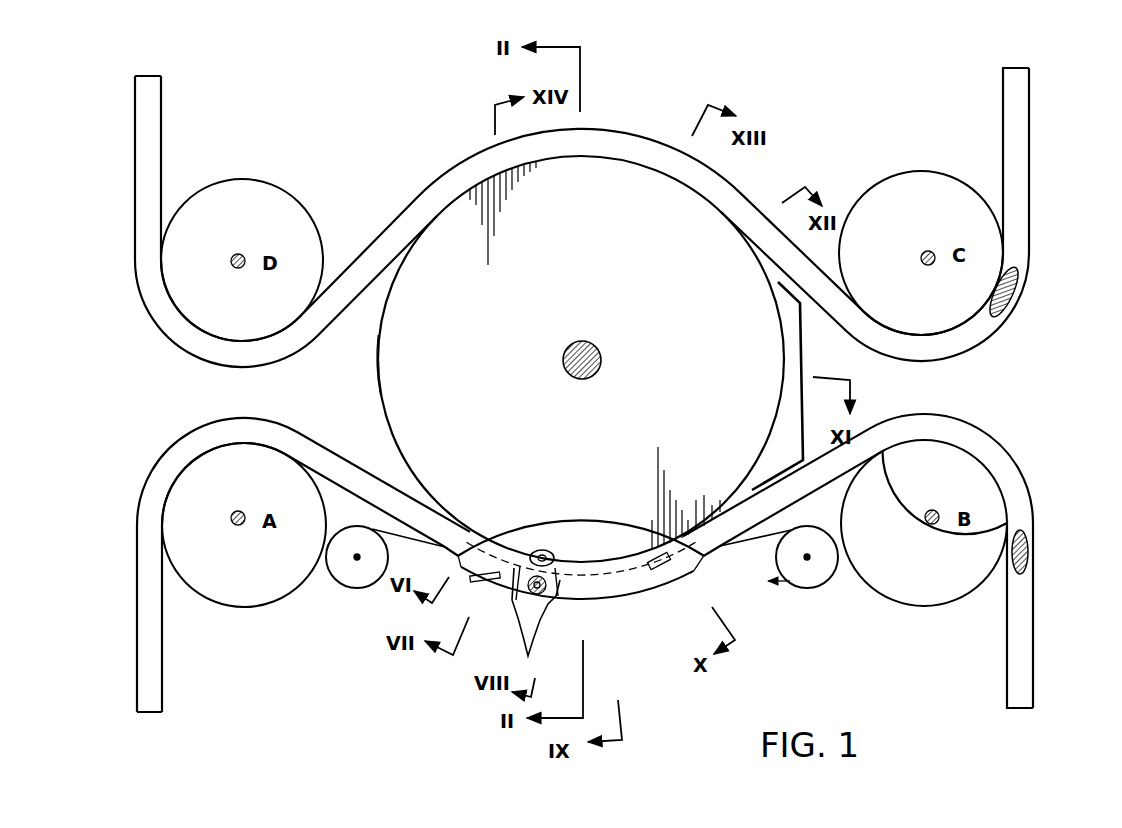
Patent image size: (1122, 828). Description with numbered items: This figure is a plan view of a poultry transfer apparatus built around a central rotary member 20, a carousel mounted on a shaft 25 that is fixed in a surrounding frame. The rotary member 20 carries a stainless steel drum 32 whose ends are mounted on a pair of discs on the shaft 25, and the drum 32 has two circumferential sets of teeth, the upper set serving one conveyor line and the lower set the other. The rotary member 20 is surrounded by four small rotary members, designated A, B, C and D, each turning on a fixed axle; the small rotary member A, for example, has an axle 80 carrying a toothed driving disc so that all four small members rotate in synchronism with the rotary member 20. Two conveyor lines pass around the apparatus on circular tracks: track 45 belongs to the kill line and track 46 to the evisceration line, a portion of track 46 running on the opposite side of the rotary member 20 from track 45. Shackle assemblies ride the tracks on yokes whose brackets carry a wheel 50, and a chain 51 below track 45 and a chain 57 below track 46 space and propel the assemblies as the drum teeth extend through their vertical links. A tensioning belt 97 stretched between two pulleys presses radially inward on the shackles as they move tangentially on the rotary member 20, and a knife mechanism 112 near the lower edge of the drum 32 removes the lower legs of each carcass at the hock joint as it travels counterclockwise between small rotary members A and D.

The rotary member 20 is at (375, 365).
The shaft 25 is at (562, 358).
The stainless steel drum 32 is at (379, 404).
The track 45 is at (140, 596).
The track 46 is at (142, 151).
The wheel 50 is at (540, 549).
The chain 51 is at (1030, 563).
The chain 57 is at (1022, 298).
The axle 80 is at (237, 527).
The tensioning belt 97 is at (739, 551).
The knife mechanism 112 is at (593, 601).